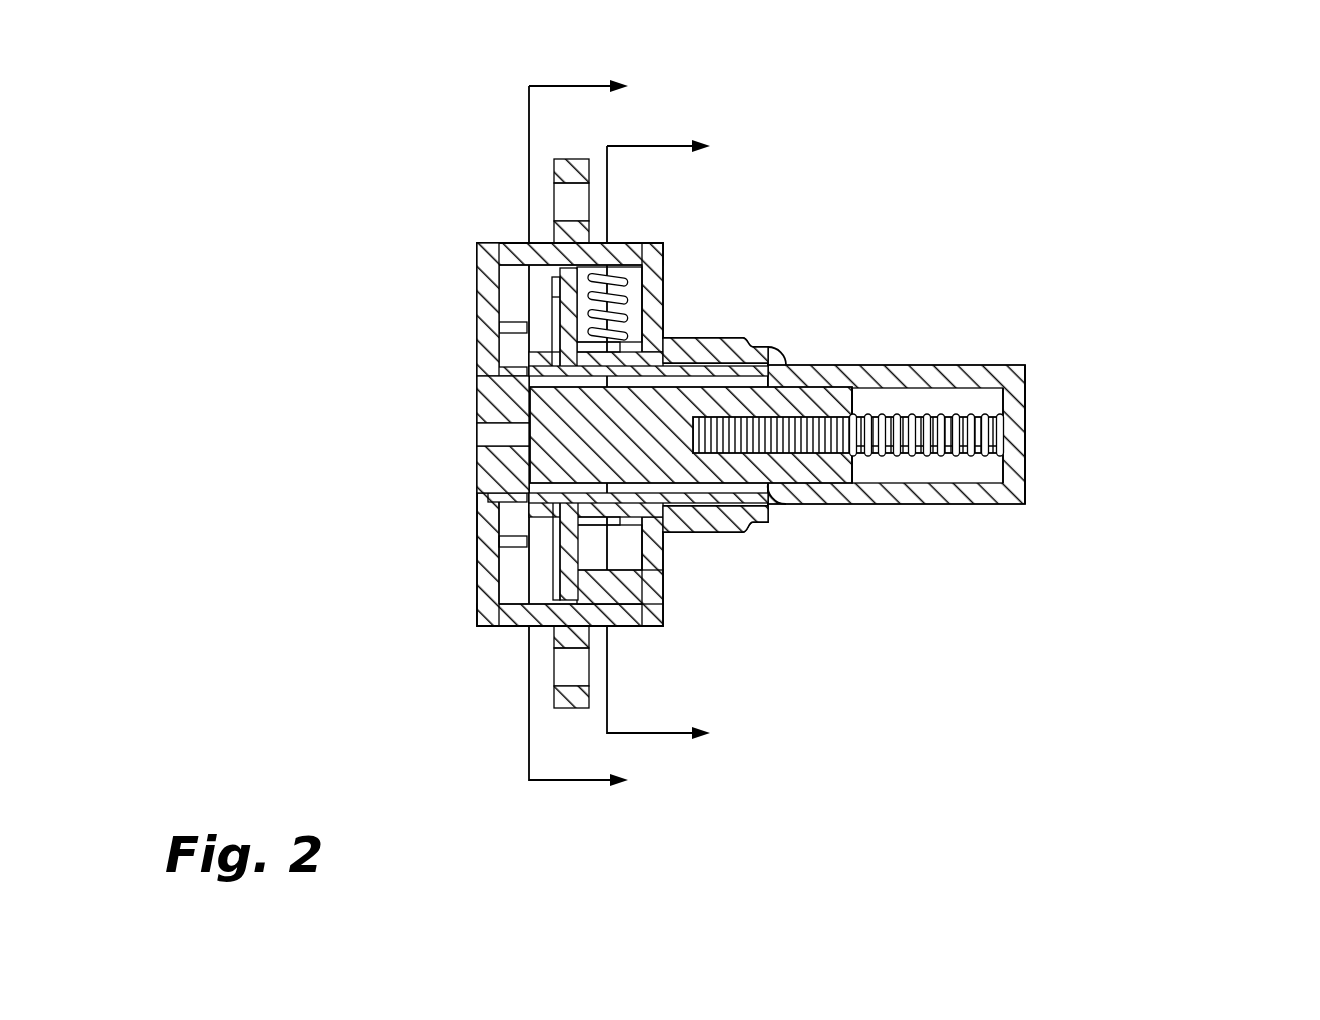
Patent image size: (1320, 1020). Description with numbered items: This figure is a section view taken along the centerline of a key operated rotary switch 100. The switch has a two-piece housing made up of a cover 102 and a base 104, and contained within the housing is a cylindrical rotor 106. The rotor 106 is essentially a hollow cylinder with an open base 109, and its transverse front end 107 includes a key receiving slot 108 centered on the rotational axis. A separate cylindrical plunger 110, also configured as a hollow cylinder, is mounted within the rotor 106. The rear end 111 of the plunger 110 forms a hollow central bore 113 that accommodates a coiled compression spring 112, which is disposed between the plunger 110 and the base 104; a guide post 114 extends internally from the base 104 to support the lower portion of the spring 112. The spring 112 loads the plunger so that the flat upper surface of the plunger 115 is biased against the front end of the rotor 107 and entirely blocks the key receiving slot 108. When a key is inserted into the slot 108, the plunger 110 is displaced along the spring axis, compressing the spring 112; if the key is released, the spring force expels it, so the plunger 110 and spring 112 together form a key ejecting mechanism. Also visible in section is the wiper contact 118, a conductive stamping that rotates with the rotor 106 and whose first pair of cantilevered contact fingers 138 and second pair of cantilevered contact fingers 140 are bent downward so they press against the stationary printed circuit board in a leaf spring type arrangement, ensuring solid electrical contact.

The key operated rotary switch 100 is at (1118, 214).
The cover 102 is at (480, 575).
The base 104 is at (1025, 417).
The cylindrical rotor 106 is at (692, 370).
The transverse front end of the rotor 107 is at (477, 408).
The key receiving slot 108 is at (477, 432).
The open base 109 is at (757, 383).
The cylindrical plunger 110 is at (843, 397).
The rear end of plunger 111 is at (818, 470).
The coiled compression spring 112 is at (768, 457).
The hollow central bore 113 is at (850, 458).
The guide post 114 is at (978, 412).
The flat upper surface of the plunger 115 is at (528, 455).
The wiper contact 118 is at (548, 330).
The first pair of cantilevered contact fingers 138 is at (552, 586).
The second pair of cantilevered contact fingers 140 is at (490, 263).